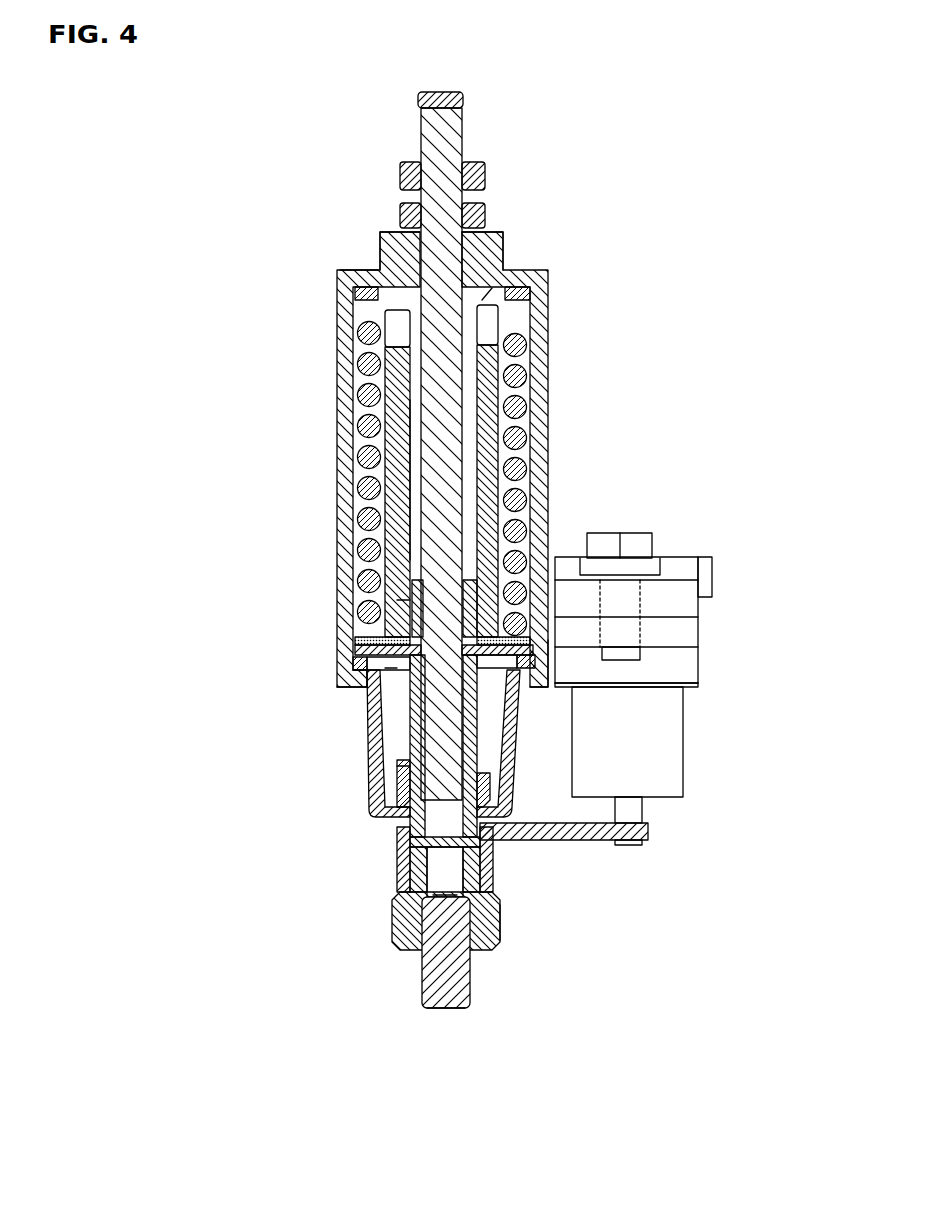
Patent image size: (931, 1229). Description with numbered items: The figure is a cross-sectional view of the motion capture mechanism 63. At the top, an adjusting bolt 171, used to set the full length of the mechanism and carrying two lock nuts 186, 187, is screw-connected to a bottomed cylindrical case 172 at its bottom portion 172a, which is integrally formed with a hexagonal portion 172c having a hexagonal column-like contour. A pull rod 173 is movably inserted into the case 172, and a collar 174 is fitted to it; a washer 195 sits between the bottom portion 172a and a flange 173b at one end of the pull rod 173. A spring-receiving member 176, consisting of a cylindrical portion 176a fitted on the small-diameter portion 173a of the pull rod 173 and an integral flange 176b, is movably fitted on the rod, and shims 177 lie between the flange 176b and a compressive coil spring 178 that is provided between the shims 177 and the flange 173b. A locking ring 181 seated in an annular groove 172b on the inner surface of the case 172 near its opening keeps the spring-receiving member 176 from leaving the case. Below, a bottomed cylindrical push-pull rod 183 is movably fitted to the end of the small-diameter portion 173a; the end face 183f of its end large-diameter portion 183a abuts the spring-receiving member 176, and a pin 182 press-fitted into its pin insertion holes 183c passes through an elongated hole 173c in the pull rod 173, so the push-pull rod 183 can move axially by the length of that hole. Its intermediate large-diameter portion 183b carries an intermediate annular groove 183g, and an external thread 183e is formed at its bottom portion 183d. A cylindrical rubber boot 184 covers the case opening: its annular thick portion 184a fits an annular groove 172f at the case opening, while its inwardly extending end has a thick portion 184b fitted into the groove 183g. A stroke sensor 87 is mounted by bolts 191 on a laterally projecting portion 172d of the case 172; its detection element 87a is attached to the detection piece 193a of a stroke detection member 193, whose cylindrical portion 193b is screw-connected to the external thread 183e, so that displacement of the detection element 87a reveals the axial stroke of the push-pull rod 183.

The motion capture mechanism 63 is at (222, 175).
The adjusting bolt 171 is at (437, 100).
The lock nut 187 is at (487, 173).
The lock nut 186 is at (486, 216).
The bottomed cylindrical case 172 is at (333, 387).
The bottom portion 172a is at (363, 273).
The annular groove 172b is at (540, 688).
The hexagonal portion 172c is at (503, 242).
The laterally projecting portion 172d is at (690, 623).
The annular groove 172f is at (345, 688).
The pull rod 173 is at (522, 258).
The small-diameter portion 173a is at (449, 480).
The flange 173b is at (483, 307).
The elongated hole 173c is at (412, 815).
The collar 174 is at (493, 392).
The spring-receiving member 176 is at (372, 700).
The cylindrical portion 176a is at (412, 592).
The flange 176b is at (698, 658).
The shims 177 is at (375, 640).
The compressive coil spring 178 is at (362, 490).
The locking ring 181 is at (352, 664).
The pin 182 is at (412, 845).
The push-pull rod 183 is at (445, 1010).
The end large-diameter portion 183a is at (386, 670).
The intermediate large-diameter portion 183b is at (399, 768).
The pin insertion holes 183c is at (412, 858).
The bottom portion 183d is at (427, 908).
The external thread 183e is at (470, 977).
The end face 183f is at (395, 605).
The intermediate annular groove 183g is at (633, 845).
The rubber boot 184 is at (397, 780).
The annular thick portion 184a is at (700, 681).
The thick portion 184b is at (400, 803).
The bolt 191 is at (636, 540).
The stroke detection member 193 is at (390, 922).
The detection piece 193a is at (494, 860).
The cylindrical portion 193b is at (500, 918).
The washer 195 is at (357, 294).
The stroke sensor 87 is at (686, 758).
The detection element 87a is at (642, 810).